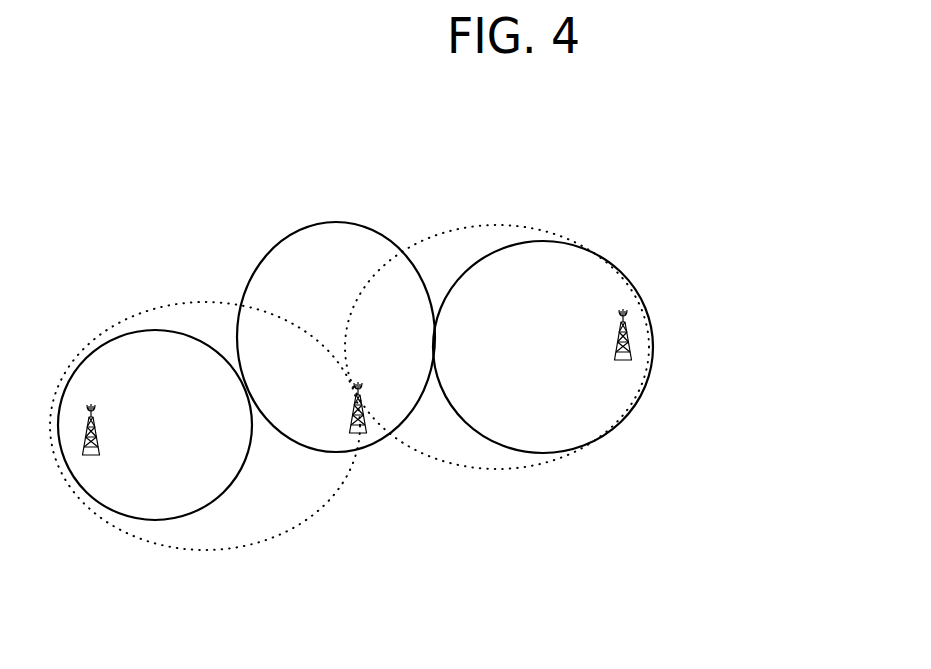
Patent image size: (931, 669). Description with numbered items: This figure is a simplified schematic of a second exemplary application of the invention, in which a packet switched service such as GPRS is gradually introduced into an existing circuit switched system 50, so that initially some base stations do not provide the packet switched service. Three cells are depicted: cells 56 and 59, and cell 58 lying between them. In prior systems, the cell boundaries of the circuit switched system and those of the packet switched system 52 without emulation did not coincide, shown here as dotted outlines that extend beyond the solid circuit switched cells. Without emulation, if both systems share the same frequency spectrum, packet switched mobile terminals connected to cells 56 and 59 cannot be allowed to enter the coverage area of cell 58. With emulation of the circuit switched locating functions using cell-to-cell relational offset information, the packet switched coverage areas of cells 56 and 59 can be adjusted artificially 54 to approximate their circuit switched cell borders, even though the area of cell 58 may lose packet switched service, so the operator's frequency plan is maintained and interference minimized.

The system 50 is at (442, 343).
The packet switched system cell boundaries 52 is at (200, 303).
The artificially adjusted coverage areas 54 is at (232, 490).
The cell 56 is at (100, 455).
The cell 58 is at (348, 427).
The cell 59 is at (615, 360).